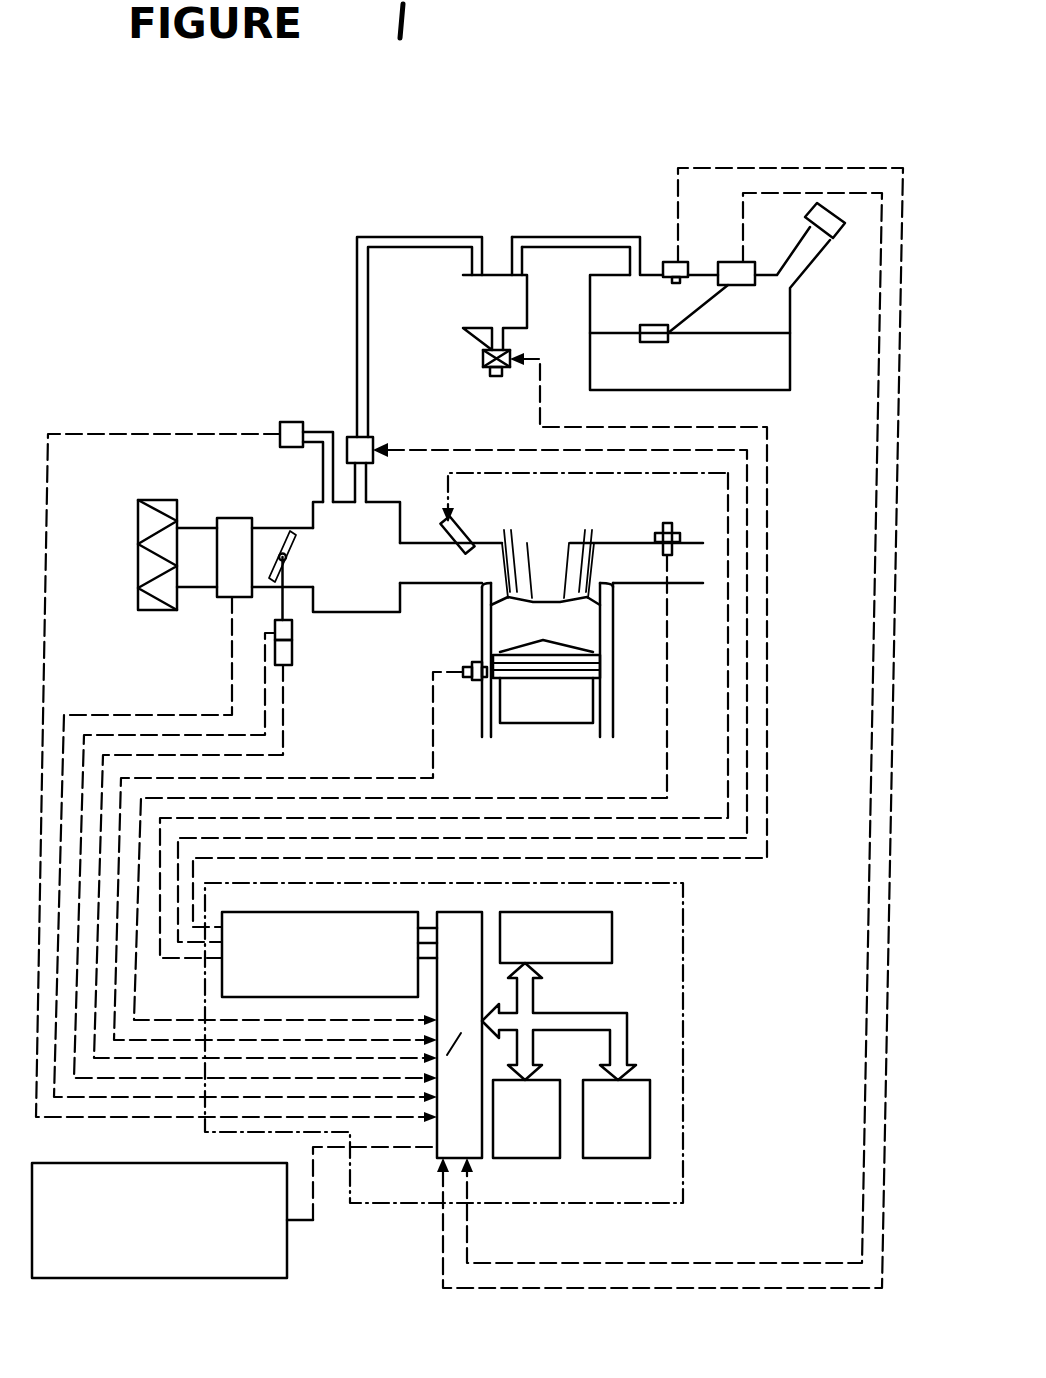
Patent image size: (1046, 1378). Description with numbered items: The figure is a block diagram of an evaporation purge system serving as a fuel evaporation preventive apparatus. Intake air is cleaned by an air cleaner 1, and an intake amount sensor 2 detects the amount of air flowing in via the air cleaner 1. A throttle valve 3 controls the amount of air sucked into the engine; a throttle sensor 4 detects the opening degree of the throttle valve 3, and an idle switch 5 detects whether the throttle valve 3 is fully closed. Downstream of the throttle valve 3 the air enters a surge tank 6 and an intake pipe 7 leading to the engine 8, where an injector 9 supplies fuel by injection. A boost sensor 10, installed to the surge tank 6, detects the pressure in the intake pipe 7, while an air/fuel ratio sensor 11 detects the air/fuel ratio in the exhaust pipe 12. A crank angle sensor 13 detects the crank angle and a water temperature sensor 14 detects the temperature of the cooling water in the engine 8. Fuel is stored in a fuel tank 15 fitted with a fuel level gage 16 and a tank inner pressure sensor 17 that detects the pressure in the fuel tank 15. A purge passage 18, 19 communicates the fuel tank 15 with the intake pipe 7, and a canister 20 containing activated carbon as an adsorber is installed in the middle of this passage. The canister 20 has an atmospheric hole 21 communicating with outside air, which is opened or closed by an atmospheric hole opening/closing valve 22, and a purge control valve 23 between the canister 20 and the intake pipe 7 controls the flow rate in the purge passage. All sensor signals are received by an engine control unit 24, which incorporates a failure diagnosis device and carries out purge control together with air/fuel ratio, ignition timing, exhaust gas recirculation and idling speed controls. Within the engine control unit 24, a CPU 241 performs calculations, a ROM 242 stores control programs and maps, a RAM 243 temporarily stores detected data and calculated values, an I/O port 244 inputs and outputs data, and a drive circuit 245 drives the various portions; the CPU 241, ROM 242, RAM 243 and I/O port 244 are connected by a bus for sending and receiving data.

The air cleaner 1 is at (160, 500).
The intake amount sensor 2 is at (237, 518).
The throttle valve 3 is at (287, 530).
The throttle sensor 4 is at (292, 630).
The idle switch 5 is at (292, 656).
The surge tank 6 is at (350, 612).
The intake pipe 7 is at (437, 587).
The engine 8 is at (614, 635).
The injector 9 is at (466, 530).
The boost sensor 10 is at (290, 422).
The air/fuel ratio sensor 11 is at (662, 530).
The exhaust pipe 12 is at (690, 588).
The crank angle sensor 13 is at (287, 1252).
The water temperature sensor 14 is at (480, 660).
The fuel tank 15 is at (793, 305).
The fuel level gage 16 is at (758, 262).
The tank inner pressure sensor 17 is at (690, 262).
The purge passage 18 is at (590, 237).
The purge passage 19 is at (415, 237).
The canister 20 is at (498, 268).
The atmospheric hole 21 is at (505, 340).
The atmospheric hole opening/closing valve 22 is at (488, 368).
The purge control valve 23 is at (375, 440).
The engine control unit 24 is at (683, 925).
The CPU 241 is at (612, 912).
The ROM 242 is at (608, 1158).
The RAM 243 is at (513, 1158).
The I/O port 244 is at (443, 903).
The drive circuit 245 is at (320, 912).